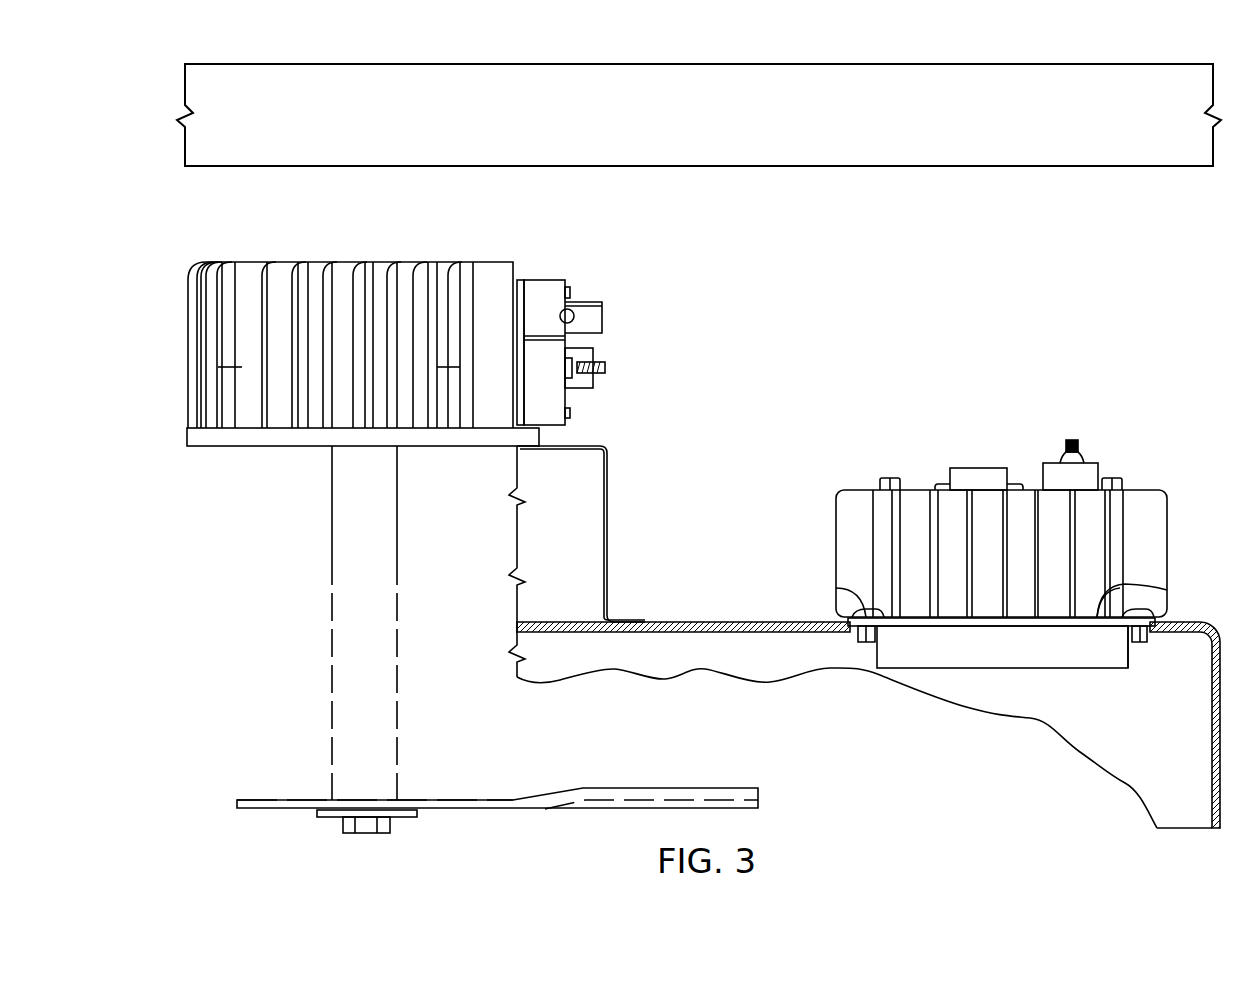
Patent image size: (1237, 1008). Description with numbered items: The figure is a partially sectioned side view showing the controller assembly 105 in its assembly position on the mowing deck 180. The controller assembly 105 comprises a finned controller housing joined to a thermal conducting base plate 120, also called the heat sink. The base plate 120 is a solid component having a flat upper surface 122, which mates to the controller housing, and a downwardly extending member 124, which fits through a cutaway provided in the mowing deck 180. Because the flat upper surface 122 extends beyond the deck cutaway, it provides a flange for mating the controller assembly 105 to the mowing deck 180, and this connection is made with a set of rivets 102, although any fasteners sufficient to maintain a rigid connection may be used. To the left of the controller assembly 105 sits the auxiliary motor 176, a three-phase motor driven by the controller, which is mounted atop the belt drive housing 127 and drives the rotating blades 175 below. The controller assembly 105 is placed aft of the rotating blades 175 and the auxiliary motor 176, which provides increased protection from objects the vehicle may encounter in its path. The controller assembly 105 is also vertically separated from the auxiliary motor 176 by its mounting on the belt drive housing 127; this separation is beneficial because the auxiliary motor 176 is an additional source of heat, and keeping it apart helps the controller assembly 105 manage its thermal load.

The auxiliary motor 176 is at (460, 244).
The belt drive housing 127 is at (608, 494).
The mowing deck 180 is at (712, 621).
The controller assembly 105 is at (1150, 457).
The rivets 102 is at (863, 608).
The flat upper surface 122 is at (1098, 612).
The base plate 120 is at (1024, 657).
The downwardly extending member 124 is at (1132, 656).
The rotating blades 175 is at (740, 786).